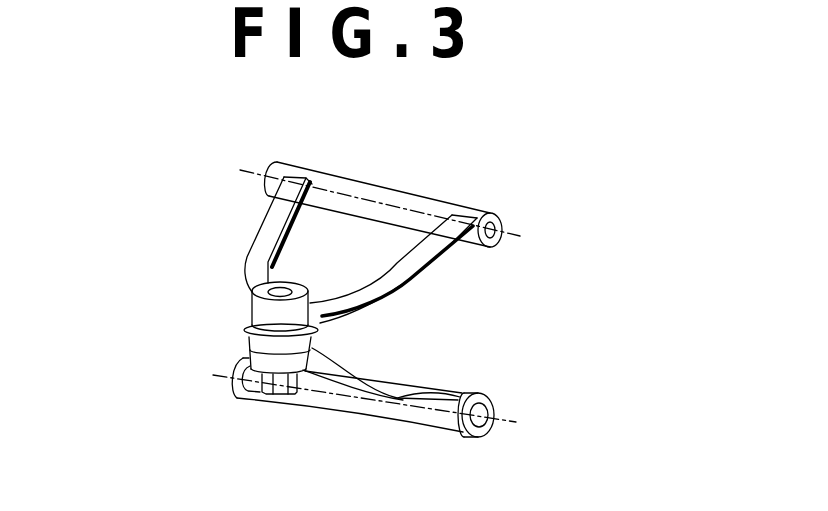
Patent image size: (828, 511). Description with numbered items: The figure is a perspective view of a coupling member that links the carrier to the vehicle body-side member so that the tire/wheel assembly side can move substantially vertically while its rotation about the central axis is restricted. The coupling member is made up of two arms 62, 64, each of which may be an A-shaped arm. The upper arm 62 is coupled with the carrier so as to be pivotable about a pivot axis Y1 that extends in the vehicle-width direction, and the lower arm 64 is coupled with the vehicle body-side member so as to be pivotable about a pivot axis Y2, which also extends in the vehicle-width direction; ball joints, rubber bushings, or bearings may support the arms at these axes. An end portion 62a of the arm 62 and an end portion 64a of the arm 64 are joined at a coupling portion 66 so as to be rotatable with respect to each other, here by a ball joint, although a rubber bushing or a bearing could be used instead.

The arm 62 is at (415, 267).
The end portion of the arm 62a is at (246, 298).
The arm 64 is at (388, 386).
The end portion of the arm 64a is at (245, 357).
The coupling portion 66 is at (237, 323).
The pivot axis Y1 is at (418, 210).
The pivot axis Y2 is at (513, 414).